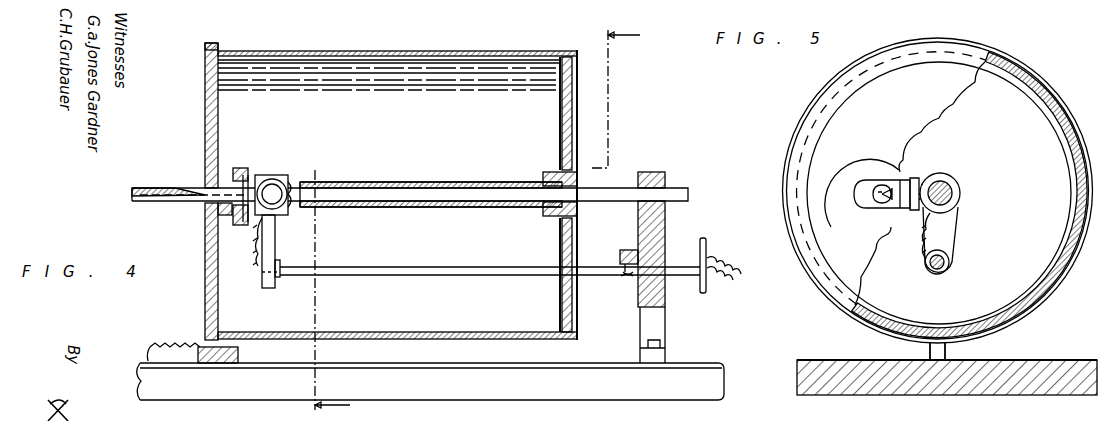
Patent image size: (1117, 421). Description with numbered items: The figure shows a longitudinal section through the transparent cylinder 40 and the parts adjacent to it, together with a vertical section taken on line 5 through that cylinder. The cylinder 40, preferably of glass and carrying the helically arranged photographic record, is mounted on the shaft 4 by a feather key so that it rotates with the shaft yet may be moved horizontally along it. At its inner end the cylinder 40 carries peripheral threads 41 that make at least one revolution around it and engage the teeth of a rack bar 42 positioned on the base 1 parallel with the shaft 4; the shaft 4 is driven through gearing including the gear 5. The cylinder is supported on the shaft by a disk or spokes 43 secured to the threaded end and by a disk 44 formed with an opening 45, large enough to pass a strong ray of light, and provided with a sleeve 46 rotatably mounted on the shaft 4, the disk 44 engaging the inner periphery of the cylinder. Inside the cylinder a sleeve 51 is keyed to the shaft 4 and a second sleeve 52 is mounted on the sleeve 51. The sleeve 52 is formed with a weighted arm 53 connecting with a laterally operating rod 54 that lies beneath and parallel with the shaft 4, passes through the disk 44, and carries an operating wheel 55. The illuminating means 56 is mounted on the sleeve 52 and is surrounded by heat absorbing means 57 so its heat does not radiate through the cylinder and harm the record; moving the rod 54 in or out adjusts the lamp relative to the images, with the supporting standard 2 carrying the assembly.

In FIG. 4, the base 1 is at (492, 372).
In FIG. 5, the base 1 is at (834, 360).
In FIG. 4, the standard post 2 is at (666, 334).
In FIG. 4, the shaft 4 is at (434, 191).
In FIG. 5, the shaft 4 is at (965, 200).
In FIG. 4, the gear 5 is at (477, 215).
In FIG. 4, the transparent cylinder 40 is at (403, 50).
In FIG. 5, the transparent cylinder 40 is at (1048, 102).
In FIG. 4, the peripheral threads 41 is at (210, 44).
In FIG. 5, the peripheral threads 41 is at (785, 144).
In FIG. 4, the rack bar 42 is at (155, 340).
In FIG. 5, the rack bar 42 is at (948, 352).
In FIG. 4, the disk or spokes 43 is at (205, 140).
In FIG. 4, the disk 44 is at (562, 125).
In FIG. 5, the disk 44 is at (912, 136).
In FIG. 5, the opening 45 is at (876, 152).
In FIG. 4, the sleeve 46 is at (557, 172).
In FIG. 4, the sleeve 51 is at (369, 188).
In FIG. 5, the sleeve 51 is at (967, 182).
In FIG. 4, the second sleeve 52 is at (288, 177).
In FIG. 5, the second sleeve 52 is at (948, 176).
In FIG. 4, the weighted arm 53 is at (268, 290).
In FIG. 5, the weighted arm 53 is at (956, 264).
In FIG. 4, the operating rod 54 is at (462, 276).
In FIG. 5, the operating rod 54 is at (938, 275).
In FIG. 4, the operating wheel 55 is at (708, 252).
In FIG. 4, the illuminating means 56 is at (272, 192).
In FIG. 5, the illuminating means 56 is at (883, 212).
In FIG. 4, the heat absorbing means 57 is at (285, 217).
In FIG. 5, the heat absorbing means 57 is at (868, 178).